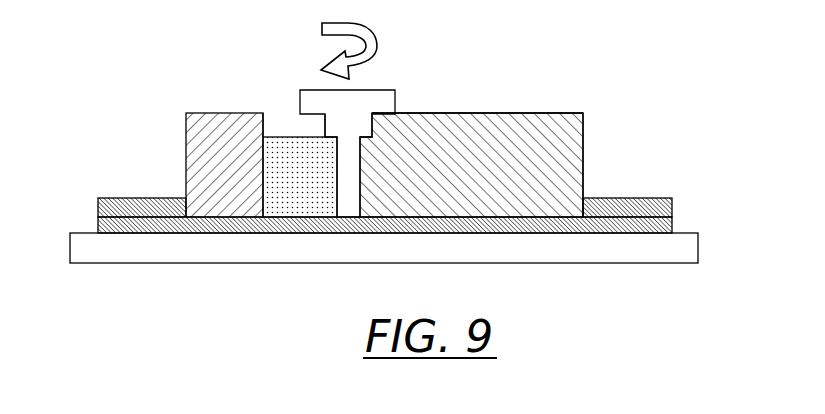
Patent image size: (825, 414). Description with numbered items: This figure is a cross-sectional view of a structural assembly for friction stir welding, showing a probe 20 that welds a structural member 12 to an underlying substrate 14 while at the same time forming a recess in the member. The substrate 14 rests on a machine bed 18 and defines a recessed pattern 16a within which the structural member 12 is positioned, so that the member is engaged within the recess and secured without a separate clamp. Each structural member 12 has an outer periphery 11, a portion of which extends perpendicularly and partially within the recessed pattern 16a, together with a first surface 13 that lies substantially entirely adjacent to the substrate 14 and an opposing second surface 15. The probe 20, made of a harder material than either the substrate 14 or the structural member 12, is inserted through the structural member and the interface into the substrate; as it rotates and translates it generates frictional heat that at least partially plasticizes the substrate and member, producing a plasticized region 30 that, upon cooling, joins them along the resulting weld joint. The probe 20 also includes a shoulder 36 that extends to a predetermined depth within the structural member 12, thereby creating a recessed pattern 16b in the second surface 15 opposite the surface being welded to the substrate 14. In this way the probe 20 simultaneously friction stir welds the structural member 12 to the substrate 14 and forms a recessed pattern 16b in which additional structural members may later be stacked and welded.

The outer periphery 11 is at (583, 137).
The structural member 12 is at (194, 122).
The first surface 13 is at (532, 222).
The substrate 14 is at (657, 198).
The second surface 15 is at (482, 113).
The recessed pattern 16a is at (186, 217).
The recessed pattern 16b is at (265, 123).
The machine bed 18 is at (685, 243).
The probe 20 is at (395, 90).
The plasticized region 30 is at (293, 185).
The shoulder 36 is at (325, 127).